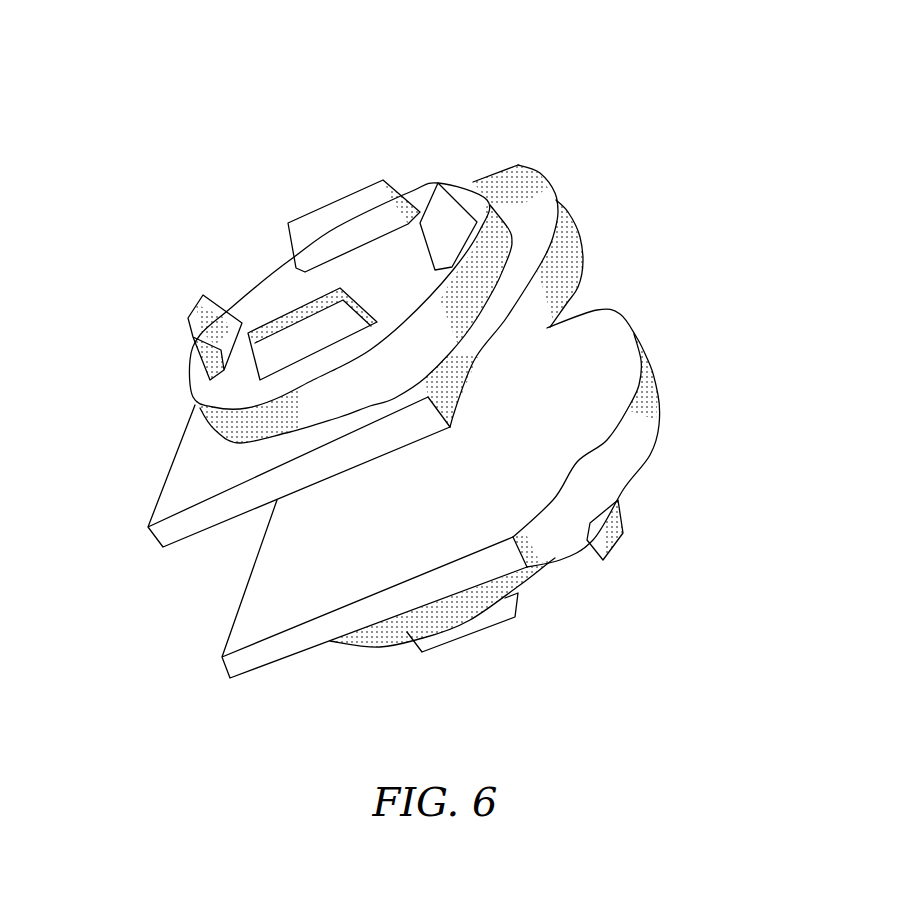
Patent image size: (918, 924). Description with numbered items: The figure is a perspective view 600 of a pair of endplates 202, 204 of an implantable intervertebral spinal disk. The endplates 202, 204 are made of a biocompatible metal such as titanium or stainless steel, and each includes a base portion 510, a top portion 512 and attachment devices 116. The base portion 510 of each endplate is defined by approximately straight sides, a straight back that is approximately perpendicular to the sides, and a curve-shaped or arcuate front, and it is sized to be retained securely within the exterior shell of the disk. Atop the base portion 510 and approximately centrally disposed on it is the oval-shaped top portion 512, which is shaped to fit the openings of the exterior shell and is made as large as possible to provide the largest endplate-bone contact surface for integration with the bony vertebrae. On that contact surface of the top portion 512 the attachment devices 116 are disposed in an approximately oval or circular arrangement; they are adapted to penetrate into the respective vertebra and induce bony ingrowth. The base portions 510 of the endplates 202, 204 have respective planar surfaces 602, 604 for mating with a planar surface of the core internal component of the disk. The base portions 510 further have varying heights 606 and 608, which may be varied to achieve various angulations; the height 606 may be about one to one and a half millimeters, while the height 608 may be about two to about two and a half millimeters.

The attachment devices 116 is at (443, 193).
The endplate 202 is at (520, 151).
The endplate 204 is at (637, 569).
The base portion 510 is at (565, 265).
The top portion 512 is at (495, 232).
The perspective view 600 is at (424, 23).
The planar surface 602 is at (525, 363).
The planar surface 604 is at (590, 422).
The height 606 is at (221, 670).
The height 608 is at (508, 553).